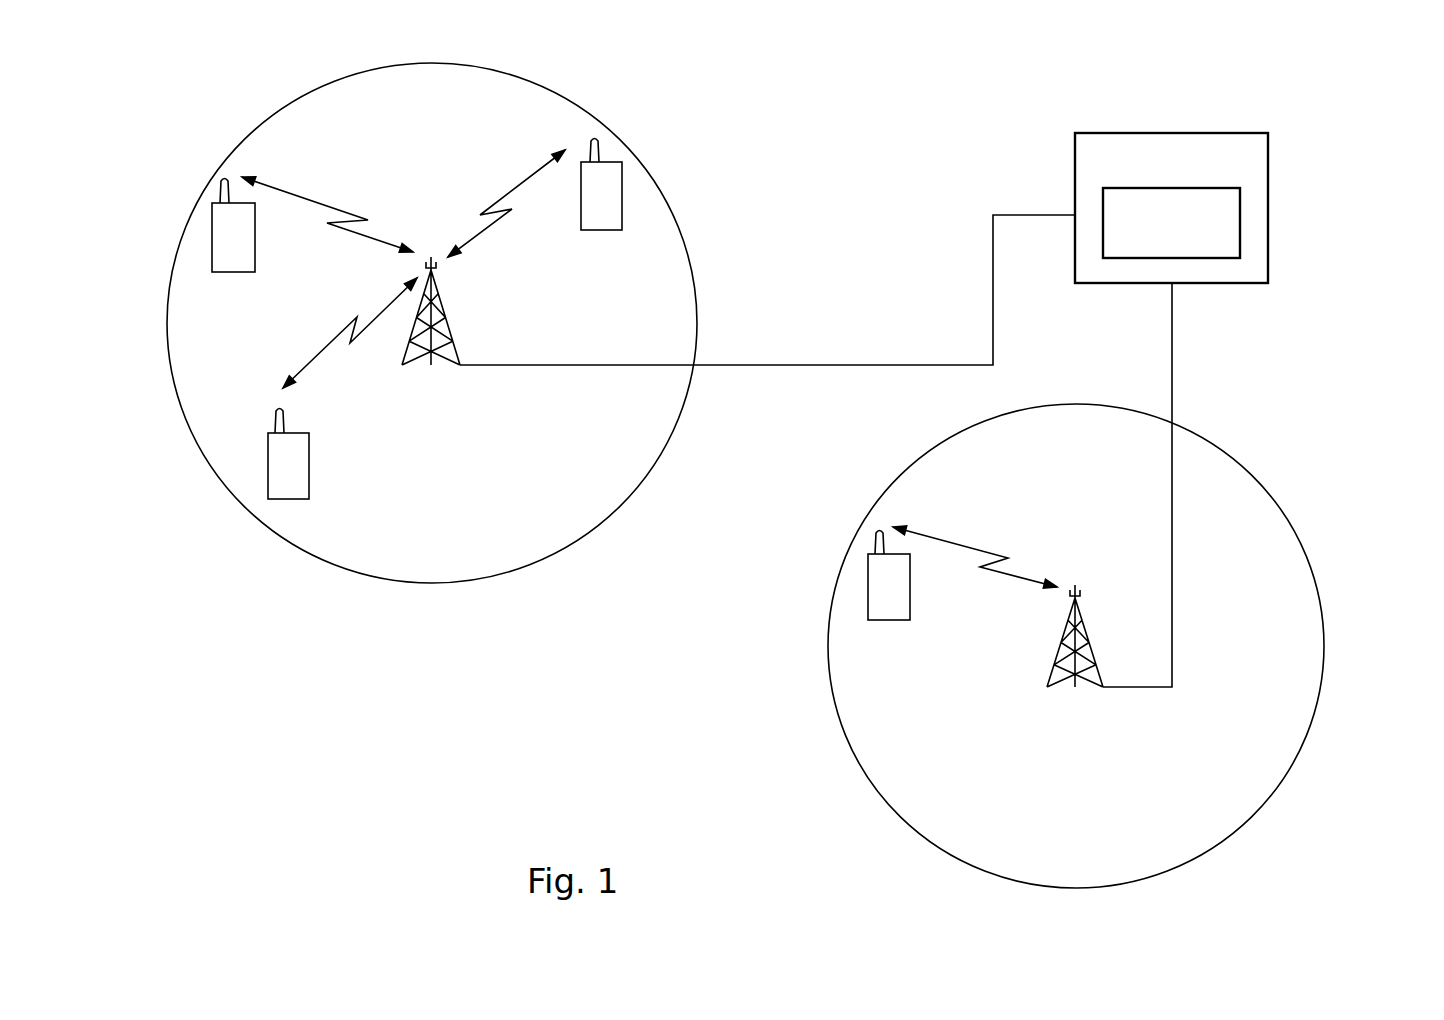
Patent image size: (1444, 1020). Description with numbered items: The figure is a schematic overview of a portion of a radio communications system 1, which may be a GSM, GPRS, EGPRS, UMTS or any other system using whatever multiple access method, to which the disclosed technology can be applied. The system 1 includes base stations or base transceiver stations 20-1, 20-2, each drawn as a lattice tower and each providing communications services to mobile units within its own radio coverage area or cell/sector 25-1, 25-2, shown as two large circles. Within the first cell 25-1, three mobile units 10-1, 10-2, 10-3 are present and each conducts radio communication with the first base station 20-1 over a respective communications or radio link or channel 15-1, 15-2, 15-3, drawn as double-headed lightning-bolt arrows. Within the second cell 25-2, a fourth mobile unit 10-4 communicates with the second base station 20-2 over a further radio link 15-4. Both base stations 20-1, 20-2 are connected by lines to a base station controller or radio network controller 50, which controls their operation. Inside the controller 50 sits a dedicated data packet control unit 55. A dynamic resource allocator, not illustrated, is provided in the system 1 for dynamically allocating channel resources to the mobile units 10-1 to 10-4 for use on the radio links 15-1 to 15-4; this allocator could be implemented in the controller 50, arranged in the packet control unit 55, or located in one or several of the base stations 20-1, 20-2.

The radio communications system 1 is at (226, 742).
The mobile unit 10-1 is at (212, 238).
The mobile unit 10-2 is at (622, 170).
The mobile unit 10-3 is at (309, 460).
The mobile unit 10-4 is at (868, 580).
The radio link 15-1 is at (310, 200).
The radio link 15-2 is at (520, 183).
The radio link 15-3 is at (325, 348).
The radio link 15-4 is at (957, 542).
The base station 20-1 is at (449, 327).
The base station 20-2 is at (1056, 660).
The cell 25-1 is at (430, 585).
The cell 25-2 is at (1323, 643).
The base station controller or radio network controller 50 is at (1172, 133).
The packet control unit 55 is at (1213, 188).